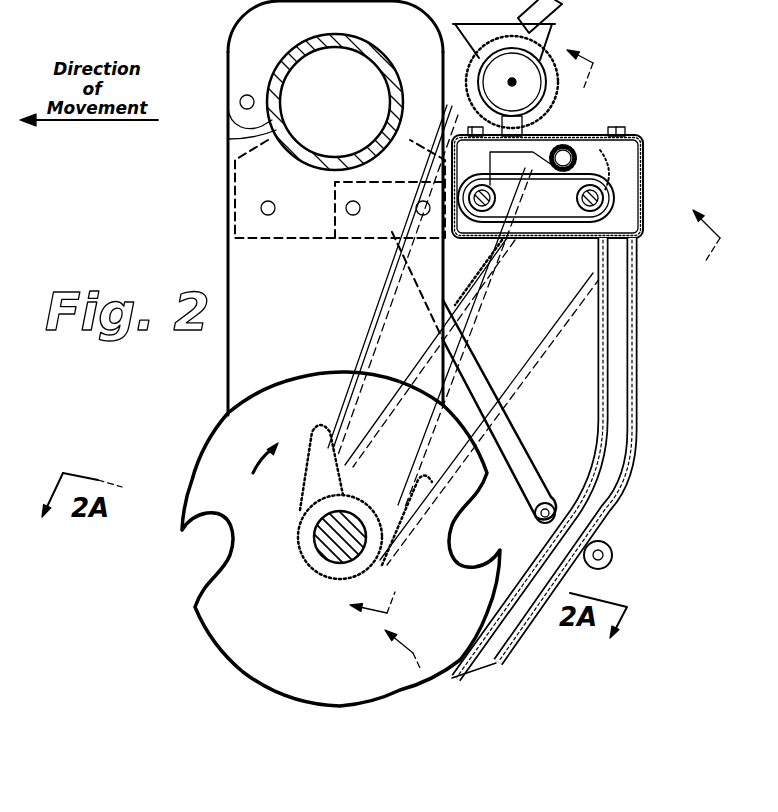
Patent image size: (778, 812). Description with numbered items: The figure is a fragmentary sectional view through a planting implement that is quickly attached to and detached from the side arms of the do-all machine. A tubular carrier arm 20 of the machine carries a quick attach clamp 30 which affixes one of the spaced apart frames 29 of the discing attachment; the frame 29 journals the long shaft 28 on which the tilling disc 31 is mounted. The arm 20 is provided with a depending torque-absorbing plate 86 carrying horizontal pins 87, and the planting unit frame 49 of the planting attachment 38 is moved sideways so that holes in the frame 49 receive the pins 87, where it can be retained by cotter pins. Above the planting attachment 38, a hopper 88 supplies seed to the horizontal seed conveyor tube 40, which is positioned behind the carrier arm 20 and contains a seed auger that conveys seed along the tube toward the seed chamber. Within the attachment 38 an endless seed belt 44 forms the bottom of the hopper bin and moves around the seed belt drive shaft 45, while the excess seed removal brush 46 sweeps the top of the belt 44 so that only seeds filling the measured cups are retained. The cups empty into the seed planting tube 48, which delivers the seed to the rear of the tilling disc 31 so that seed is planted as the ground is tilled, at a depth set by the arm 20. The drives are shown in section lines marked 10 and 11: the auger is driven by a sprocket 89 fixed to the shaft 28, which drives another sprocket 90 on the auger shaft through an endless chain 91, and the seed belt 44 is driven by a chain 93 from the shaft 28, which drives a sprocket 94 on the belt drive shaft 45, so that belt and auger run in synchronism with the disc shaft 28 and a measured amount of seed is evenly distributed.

The section line 10- 10 is at (474, 337).
The section line 11- 11 is at (557, 432).
The arm 20 is at (228, 139).
The shaft 28 is at (312, 550).
The frame 29 is at (228, 367).
The quick attach clamp 30 is at (237, 42).
The tilling disc 31 is at (187, 490).
The planting attachment 38 is at (662, 146).
The seed conveyor tube 40 is at (548, 88).
The endless seed belt 44 is at (640, 146).
The seed belt drive shaft 45 is at (600, 200).
The excess seed removal brush 46 is at (552, 137).
The seed planting tube 48 is at (640, 380).
The planting unit frame 49 is at (517, 440).
The torque-absorbing plate 86 is at (236, 208).
The horizontal pin 87 is at (333, 200).
The hopper 88 is at (563, 26).
The sprocket 89 is at (352, 490).
The sprocket 90 is at (475, 63).
The endless chain 91 is at (378, 300).
The chain 93 is at (530, 360).
The sprocket 94 is at (648, 163).